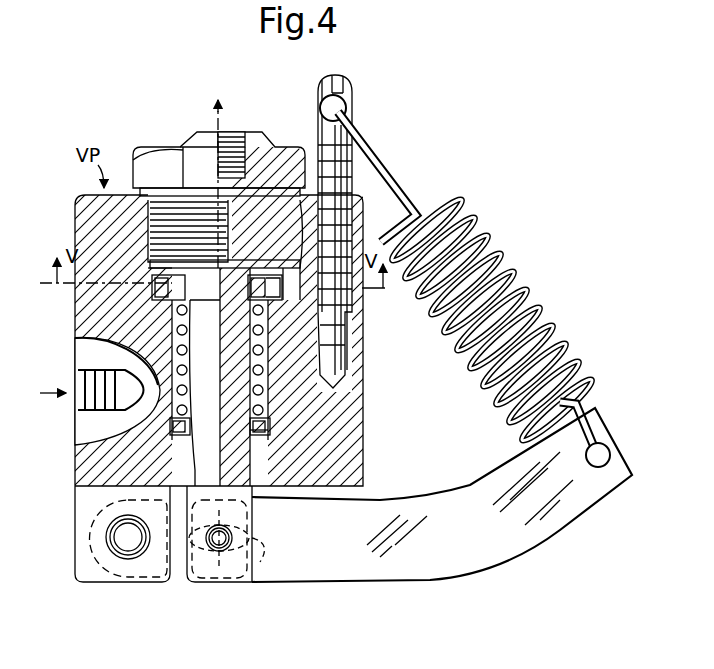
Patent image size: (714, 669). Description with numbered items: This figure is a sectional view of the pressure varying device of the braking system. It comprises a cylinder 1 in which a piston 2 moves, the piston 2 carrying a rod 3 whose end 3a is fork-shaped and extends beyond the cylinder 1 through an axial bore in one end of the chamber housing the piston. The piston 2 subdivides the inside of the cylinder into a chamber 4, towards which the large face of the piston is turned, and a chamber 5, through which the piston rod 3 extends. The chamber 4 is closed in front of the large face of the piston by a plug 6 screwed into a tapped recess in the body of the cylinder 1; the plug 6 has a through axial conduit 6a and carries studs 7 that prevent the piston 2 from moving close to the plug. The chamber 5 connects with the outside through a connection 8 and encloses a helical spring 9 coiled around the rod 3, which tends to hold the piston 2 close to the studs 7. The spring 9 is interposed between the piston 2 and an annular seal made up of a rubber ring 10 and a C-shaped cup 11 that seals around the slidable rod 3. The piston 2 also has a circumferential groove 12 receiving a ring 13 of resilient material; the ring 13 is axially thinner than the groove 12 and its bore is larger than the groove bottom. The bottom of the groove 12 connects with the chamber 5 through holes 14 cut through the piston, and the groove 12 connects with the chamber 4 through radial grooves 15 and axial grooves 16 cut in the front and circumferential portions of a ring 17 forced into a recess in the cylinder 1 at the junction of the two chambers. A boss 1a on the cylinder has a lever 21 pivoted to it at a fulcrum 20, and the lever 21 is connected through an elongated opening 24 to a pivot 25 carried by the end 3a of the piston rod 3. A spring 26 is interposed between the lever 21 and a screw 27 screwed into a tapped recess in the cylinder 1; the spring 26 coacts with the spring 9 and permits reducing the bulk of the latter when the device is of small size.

The cylinder 1 is at (75, 320).
The boss 1a is at (82, 578).
The piston 2 is at (150, 268).
The rod 3 is at (247, 492).
The end of the rod 3a is at (247, 578).
The chamber 4 is at (283, 262).
The chamber 5 is at (262, 400).
The plug 6 is at (284, 162).
The through axial conduit 6a is at (230, 180).
The studs 7 is at (250, 262).
The connection 8 is at (80, 412).
The helical spring 9 is at (262, 355).
The rubber ring 10 is at (180, 436).
The C-shaped cup 11 is at (268, 436).
The circumferential groove 12 is at (210, 295).
The ring of resilient material 13 is at (165, 298).
The holes 14 is at (258, 300).
The radial grooves 15 is at (270, 300).
The axial grooves 16 is at (302, 275).
The ring 17 is at (266, 265).
The fulcrum 20 is at (132, 545).
The lever 21 is at (525, 530).
The elongated opening 24 is at (265, 553).
The pivot 25 is at (215, 548).
The spring 26 is at (533, 297).
The screw 27 is at (352, 105).